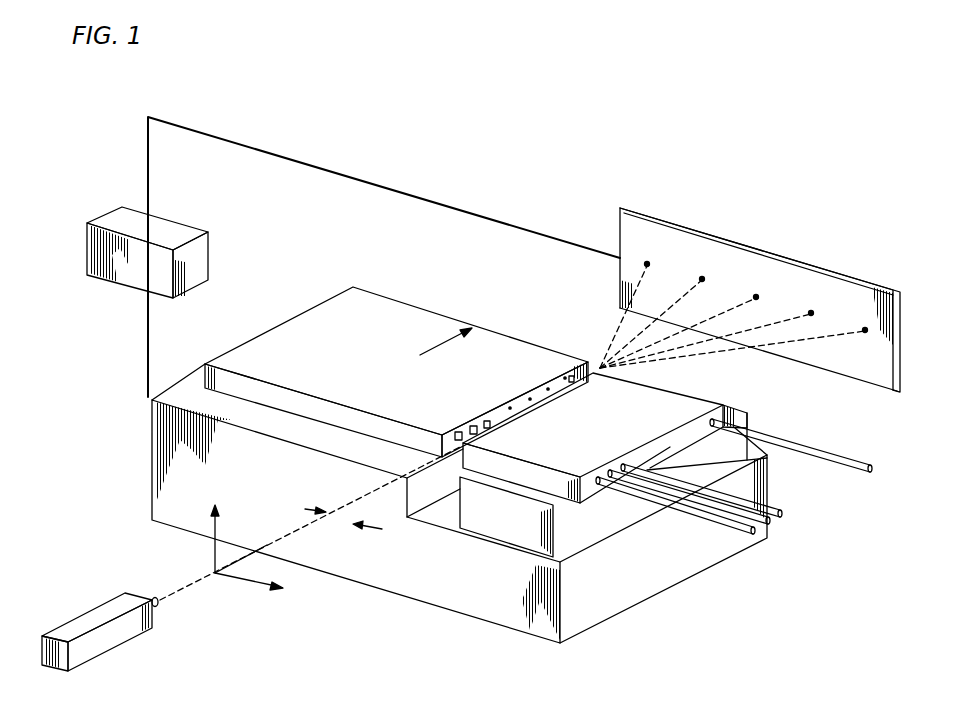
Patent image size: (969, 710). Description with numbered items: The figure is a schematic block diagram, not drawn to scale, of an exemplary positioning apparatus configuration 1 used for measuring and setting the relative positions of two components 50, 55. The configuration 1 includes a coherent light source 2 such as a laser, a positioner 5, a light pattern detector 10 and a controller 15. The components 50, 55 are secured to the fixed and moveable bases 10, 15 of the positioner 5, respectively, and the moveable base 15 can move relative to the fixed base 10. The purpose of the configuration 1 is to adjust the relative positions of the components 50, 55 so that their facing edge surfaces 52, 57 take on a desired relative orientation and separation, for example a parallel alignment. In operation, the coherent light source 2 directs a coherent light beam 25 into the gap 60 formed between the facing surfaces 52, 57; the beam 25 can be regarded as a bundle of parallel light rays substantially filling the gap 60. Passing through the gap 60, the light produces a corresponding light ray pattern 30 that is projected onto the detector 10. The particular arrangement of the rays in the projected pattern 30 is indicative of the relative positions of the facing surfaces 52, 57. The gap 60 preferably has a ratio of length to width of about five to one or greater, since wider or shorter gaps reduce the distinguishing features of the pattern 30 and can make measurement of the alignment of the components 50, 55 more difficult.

The configuration 1 is at (485, 147).
The coherent light source 2 is at (148, 593).
The positioner 5 is at (477, 618).
The light pattern detector 10 is at (150, 424).
The controller 15 is at (208, 257).
The coherent light beam 25 is at (198, 583).
The light ray pattern 30 is at (649, 262).
The component 50 is at (413, 306).
The edge surface 52 is at (468, 422).
The component 55 is at (738, 405).
The edge surface 57 is at (460, 458).
The gap 60 is at (538, 395).